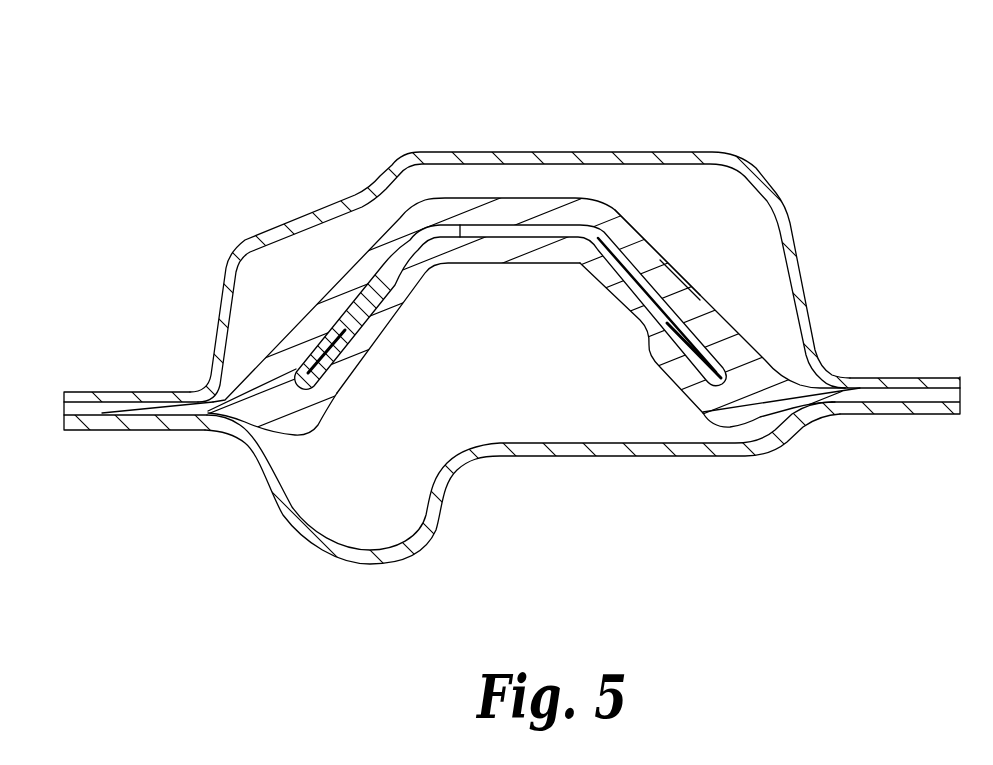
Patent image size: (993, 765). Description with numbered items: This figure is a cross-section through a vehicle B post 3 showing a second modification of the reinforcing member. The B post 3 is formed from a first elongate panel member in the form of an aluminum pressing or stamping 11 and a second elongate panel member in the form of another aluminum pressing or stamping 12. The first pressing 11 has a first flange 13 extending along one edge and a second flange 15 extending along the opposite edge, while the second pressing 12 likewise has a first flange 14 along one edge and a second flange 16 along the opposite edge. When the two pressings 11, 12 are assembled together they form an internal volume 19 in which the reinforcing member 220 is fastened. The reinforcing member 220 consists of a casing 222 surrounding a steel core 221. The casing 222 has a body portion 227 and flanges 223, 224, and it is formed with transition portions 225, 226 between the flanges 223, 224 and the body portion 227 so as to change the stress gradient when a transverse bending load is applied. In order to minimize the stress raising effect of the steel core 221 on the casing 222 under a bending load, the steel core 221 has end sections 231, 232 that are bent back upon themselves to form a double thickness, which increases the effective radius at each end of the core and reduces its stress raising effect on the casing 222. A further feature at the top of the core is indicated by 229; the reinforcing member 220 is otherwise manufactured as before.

The B post 3 is at (496, 382).
The first pressing 11 is at (496, 382).
The second pressing 12 is at (496, 382).
The first flange 13 is at (88, 397).
The first flange 14 is at (153, 430).
The second flange 15 is at (881, 377).
The second flange 16 is at (890, 413).
The internal volume 19 is at (525, 372).
The reinforcing member 220 is at (445, 184).
The steel core 221 is at (496, 382).
The casing 222 is at (643, 240).
The flange 223 is at (95, 415).
The flange 224 is at (850, 403).
The transition portion 225 is at (312, 433).
The transition portion 226 is at (697, 413).
The body portion 227 is at (675, 270).
The top portion of insert strip 229 is at (472, 232).
The end section 231 is at (337, 348).
The end section 232 is at (682, 343).